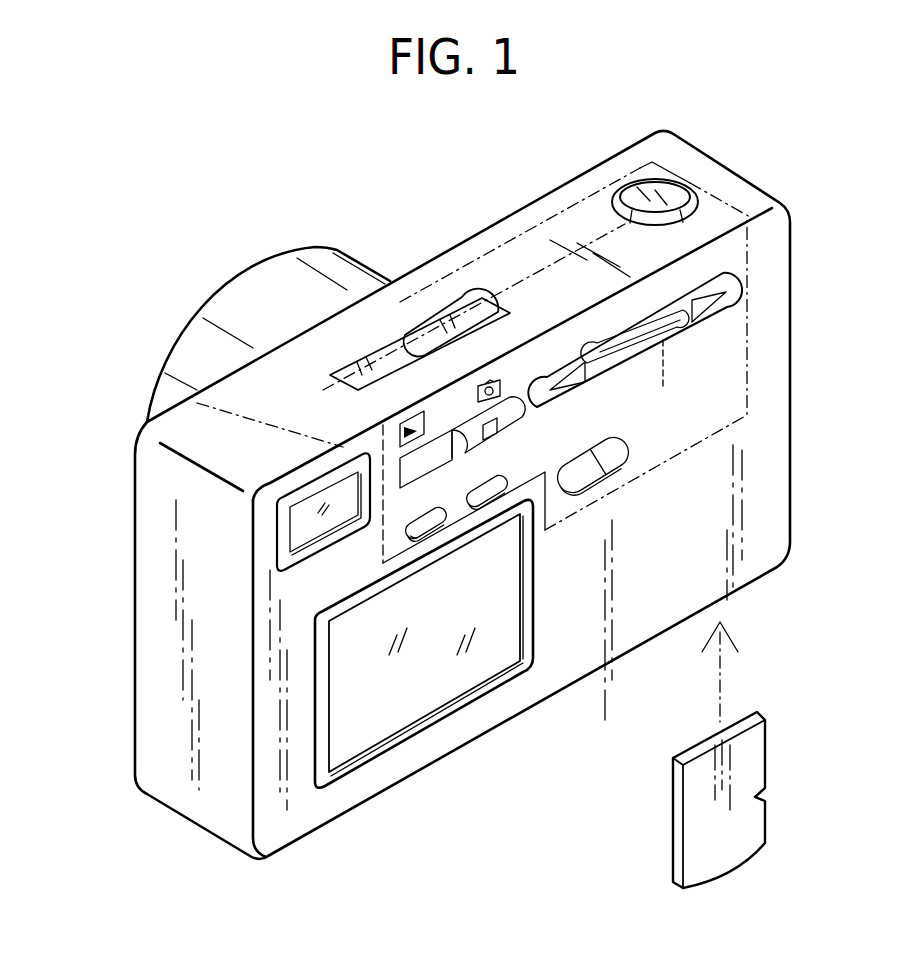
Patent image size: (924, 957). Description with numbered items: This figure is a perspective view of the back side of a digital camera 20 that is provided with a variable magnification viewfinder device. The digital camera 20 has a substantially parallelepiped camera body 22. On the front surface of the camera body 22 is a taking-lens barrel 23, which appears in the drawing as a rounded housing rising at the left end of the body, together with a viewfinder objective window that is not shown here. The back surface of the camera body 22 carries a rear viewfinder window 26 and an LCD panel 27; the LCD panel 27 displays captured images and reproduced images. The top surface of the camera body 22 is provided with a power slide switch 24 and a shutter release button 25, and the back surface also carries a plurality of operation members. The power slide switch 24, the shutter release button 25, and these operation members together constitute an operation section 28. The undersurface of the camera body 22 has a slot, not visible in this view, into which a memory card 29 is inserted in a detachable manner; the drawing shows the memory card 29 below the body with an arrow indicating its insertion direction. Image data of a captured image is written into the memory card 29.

The digital camera 20 is at (170, 247).
The camera body 22 is at (777, 482).
The taking-lens barrel 23 is at (280, 272).
The power slide switch 24 is at (457, 313).
The shutter release button 25 is at (632, 198).
The rear viewfinder window 26 is at (307, 523).
The LCD panel 27 is at (493, 638).
The operation section 28 is at (727, 347).
The memory card 29 is at (747, 755).